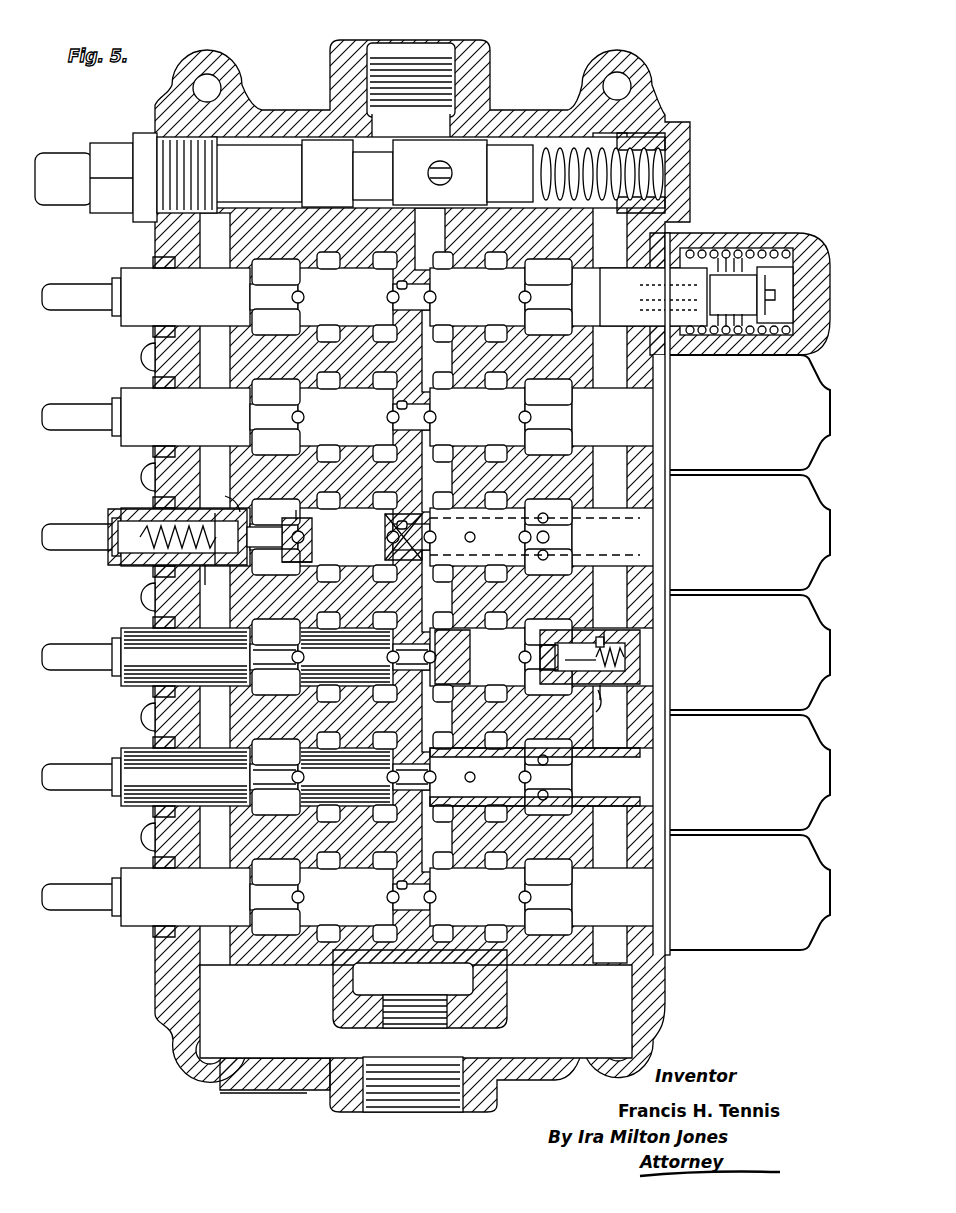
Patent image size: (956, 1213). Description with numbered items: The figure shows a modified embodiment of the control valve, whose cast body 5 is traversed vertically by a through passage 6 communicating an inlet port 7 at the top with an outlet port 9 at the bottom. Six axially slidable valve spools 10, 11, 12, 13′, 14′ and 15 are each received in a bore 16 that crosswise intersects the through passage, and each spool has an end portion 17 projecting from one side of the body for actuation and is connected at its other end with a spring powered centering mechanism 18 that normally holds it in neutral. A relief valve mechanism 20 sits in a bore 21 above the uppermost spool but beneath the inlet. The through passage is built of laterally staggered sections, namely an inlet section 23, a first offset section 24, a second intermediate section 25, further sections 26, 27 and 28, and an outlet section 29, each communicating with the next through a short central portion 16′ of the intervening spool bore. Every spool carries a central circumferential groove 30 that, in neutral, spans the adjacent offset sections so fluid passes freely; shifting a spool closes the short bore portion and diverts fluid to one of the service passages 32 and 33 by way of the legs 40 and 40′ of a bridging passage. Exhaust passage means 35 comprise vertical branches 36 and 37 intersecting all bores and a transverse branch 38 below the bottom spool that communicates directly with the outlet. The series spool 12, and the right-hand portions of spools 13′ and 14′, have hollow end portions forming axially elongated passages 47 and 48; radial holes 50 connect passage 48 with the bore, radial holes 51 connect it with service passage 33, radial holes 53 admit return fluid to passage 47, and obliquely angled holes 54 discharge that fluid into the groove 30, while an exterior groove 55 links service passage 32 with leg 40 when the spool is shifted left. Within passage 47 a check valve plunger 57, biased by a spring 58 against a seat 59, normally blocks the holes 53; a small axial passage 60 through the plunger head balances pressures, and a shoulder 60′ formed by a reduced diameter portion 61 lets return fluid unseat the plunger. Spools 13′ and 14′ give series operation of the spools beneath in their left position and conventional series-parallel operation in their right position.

The body 5 is at (693, 74).
The through passage 6 is at (428, 28).
The inlet port 7 is at (440, 68).
The outlet port 9 is at (422, 1095).
The valve spool 10 is at (130, 268).
The valve spool 11 is at (130, 388).
The valve spool 12 is at (126, 508).
The valve spool 13′ is at (130, 628).
The valve spool 14′ is at (130, 748).
The valve spool 15 is at (130, 868).
The bore 16 is at (185, 296).
The short central portion of the bore 16′ is at (402, 280).
The end portion 17 is at (122, 326).
The centering mechanism 18 is at (765, 232).
The relief valve mechanism 20 is at (707, 158).
The bore 21 is at (322, 148).
The inlet section 23 is at (404, 238).
The first offset section 24 is at (452, 366).
The second intermediate section 25 is at (404, 476).
The through passage section 26 is at (452, 606).
The through passage section 27 is at (404, 716).
The through passage section 28 is at (452, 846).
The outlet section 29 is at (413, 979).
The circumferential groove 30 is at (393, 309).
The service passage 32 is at (286, 279).
The service passage 33 is at (560, 276).
The exhaust passage means 35 is at (290, 1043).
The vertical branch 36 is at (228, 376).
The vertical branch 37 is at (626, 478).
The transverse branch 38 is at (333, 1045).
The leg of bridging passage 40 is at (332, 258).
The leg of bridging passage 40′ is at (494, 258).
The axially elongated passage 47 is at (426, 594).
The axially elongated passage 48 is at (500, 542).
The radial holes 50 is at (483, 652).
The radial holes 51 is at (550, 537).
The radial holes 53 is at (214, 526).
The obliquely angled holes 54 is at (380, 535).
The circumferential groove 55 is at (316, 560).
The check valve plunger 57 is at (600, 637).
The spring 58 is at (140, 533).
The seat 59 is at (446, 603).
The axial passage 60 is at (461, 572).
The shoulder 60′ is at (420, 636).
The reduced diameter portion 61 is at (417, 601).